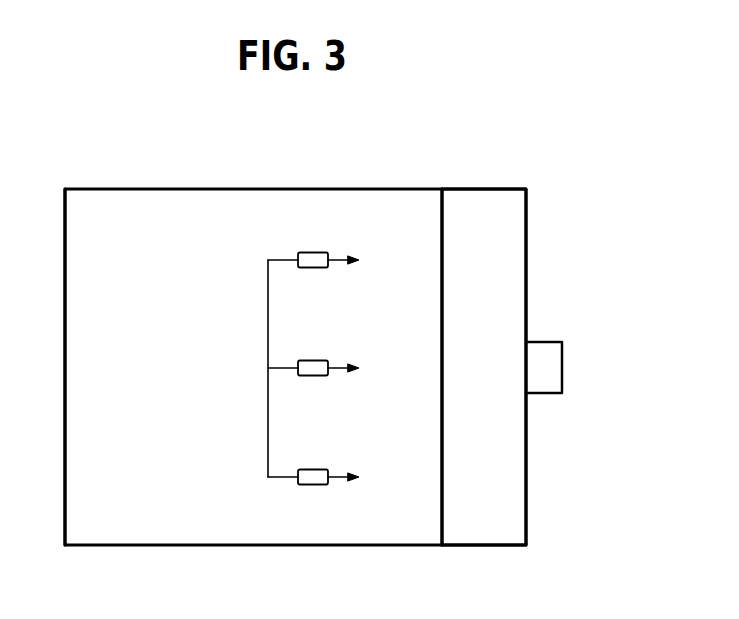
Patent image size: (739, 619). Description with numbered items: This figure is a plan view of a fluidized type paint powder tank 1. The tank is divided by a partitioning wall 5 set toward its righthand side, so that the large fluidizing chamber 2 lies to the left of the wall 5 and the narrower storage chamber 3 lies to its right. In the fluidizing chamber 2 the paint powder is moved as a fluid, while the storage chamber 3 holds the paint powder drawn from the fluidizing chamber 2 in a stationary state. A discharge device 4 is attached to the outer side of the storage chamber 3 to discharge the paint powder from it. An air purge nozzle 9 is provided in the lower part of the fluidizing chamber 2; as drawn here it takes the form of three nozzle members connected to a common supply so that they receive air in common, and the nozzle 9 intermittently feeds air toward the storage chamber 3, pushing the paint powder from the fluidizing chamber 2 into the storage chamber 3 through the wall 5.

The fluidized type paint powder tank 1 is at (219, 188).
The fluidizing chamber 2 is at (77, 375).
The storage chamber 3 is at (507, 286).
The discharge device 4 is at (543, 383).
The partitioning wall 5 is at (442, 223).
The air purge nozzle 9 is at (313, 485).